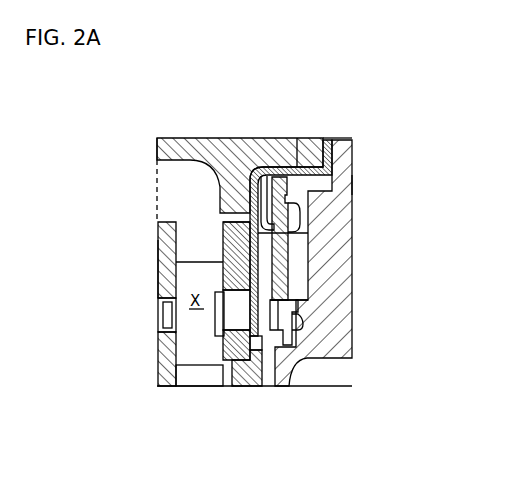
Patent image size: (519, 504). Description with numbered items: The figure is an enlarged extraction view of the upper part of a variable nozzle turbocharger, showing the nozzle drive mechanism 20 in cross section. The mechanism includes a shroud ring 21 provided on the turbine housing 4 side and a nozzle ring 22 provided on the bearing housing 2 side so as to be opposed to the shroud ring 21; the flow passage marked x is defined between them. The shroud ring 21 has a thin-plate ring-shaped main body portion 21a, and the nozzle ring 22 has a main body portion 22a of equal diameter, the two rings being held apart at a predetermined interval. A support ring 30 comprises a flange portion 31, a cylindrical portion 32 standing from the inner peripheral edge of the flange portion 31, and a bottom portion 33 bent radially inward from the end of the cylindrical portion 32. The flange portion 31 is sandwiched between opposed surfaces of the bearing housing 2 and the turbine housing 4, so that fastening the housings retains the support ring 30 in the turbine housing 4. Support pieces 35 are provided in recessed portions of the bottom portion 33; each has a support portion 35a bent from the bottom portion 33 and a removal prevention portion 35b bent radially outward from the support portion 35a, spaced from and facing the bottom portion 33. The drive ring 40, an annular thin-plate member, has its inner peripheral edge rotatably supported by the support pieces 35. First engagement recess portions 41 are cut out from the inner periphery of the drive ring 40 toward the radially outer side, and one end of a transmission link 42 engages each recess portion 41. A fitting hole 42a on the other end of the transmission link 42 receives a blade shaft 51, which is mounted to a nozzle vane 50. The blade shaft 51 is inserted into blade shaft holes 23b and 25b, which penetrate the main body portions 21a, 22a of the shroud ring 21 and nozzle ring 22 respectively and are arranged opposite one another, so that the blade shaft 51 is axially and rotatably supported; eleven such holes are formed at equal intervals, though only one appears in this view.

The nozzle drive mechanism 20 is at (115, 104).
The bearing housing 2 is at (353, 152).
The turbine housing 4 is at (310, 138).
The shroud ring 21 is at (158, 240).
The main body portion 21a is at (158, 274).
The nozzle ring 22 is at (236, 222).
The main body portion 22a is at (217, 228).
The blade shaft hole 23b is at (160, 320).
The blade shaft hole 25b is at (238, 360).
The support ring 30 is at (300, 262).
The flange portion 31 is at (333, 138).
The cylindrical portion 32 is at (353, 181).
The bottom portion 33 is at (292, 288).
The support piece 35 is at (290, 212).
The support portion 35a is at (270, 232).
The removal prevention portion 35b is at (301, 218).
The drive ring 40 is at (262, 138).
The first engagement recess portion 41 is at (297, 138).
The transmission link 42 is at (299, 305).
The fitting hole 42a is at (300, 330).
The nozzle vane 50 is at (196, 340).
The blade shaft 51 is at (257, 322).